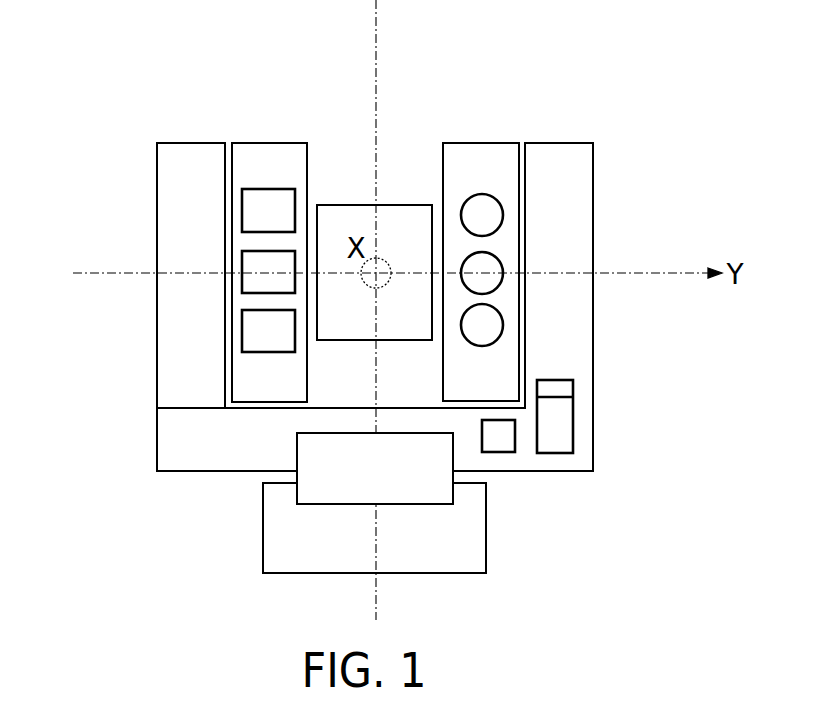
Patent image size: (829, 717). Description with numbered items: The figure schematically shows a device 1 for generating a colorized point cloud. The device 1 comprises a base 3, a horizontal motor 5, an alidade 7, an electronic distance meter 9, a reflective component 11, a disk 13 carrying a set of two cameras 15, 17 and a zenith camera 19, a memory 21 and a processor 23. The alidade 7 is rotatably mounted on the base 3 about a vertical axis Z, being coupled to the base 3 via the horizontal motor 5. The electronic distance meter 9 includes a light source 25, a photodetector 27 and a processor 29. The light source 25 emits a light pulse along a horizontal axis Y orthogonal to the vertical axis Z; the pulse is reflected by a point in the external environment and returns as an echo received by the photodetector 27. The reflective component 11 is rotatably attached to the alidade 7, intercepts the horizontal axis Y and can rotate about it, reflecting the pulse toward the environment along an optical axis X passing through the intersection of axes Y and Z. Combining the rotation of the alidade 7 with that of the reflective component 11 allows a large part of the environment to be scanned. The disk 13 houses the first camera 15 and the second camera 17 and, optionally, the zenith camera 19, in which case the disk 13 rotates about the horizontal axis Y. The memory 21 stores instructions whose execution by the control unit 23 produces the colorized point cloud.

The device 1 is at (140, 152).
The base 3 is at (374, 528).
The horizontal motor 5 is at (375, 468).
The alidade 7 is at (191, 275).
The electronic distance meter 9 is at (269, 272).
The reflective component 11 is at (374, 272).
The disk 13 is at (481, 272).
The first camera 15 is at (482, 325).
The second camera 17 is at (482, 273).
The zenith camera 19 is at (482, 215).
The memory 21 is at (555, 416).
The processor 23 is at (498, 436).
The light source 25 is at (268, 272).
The photodetector 27 is at (268, 331).
The processor 29 is at (268, 210).